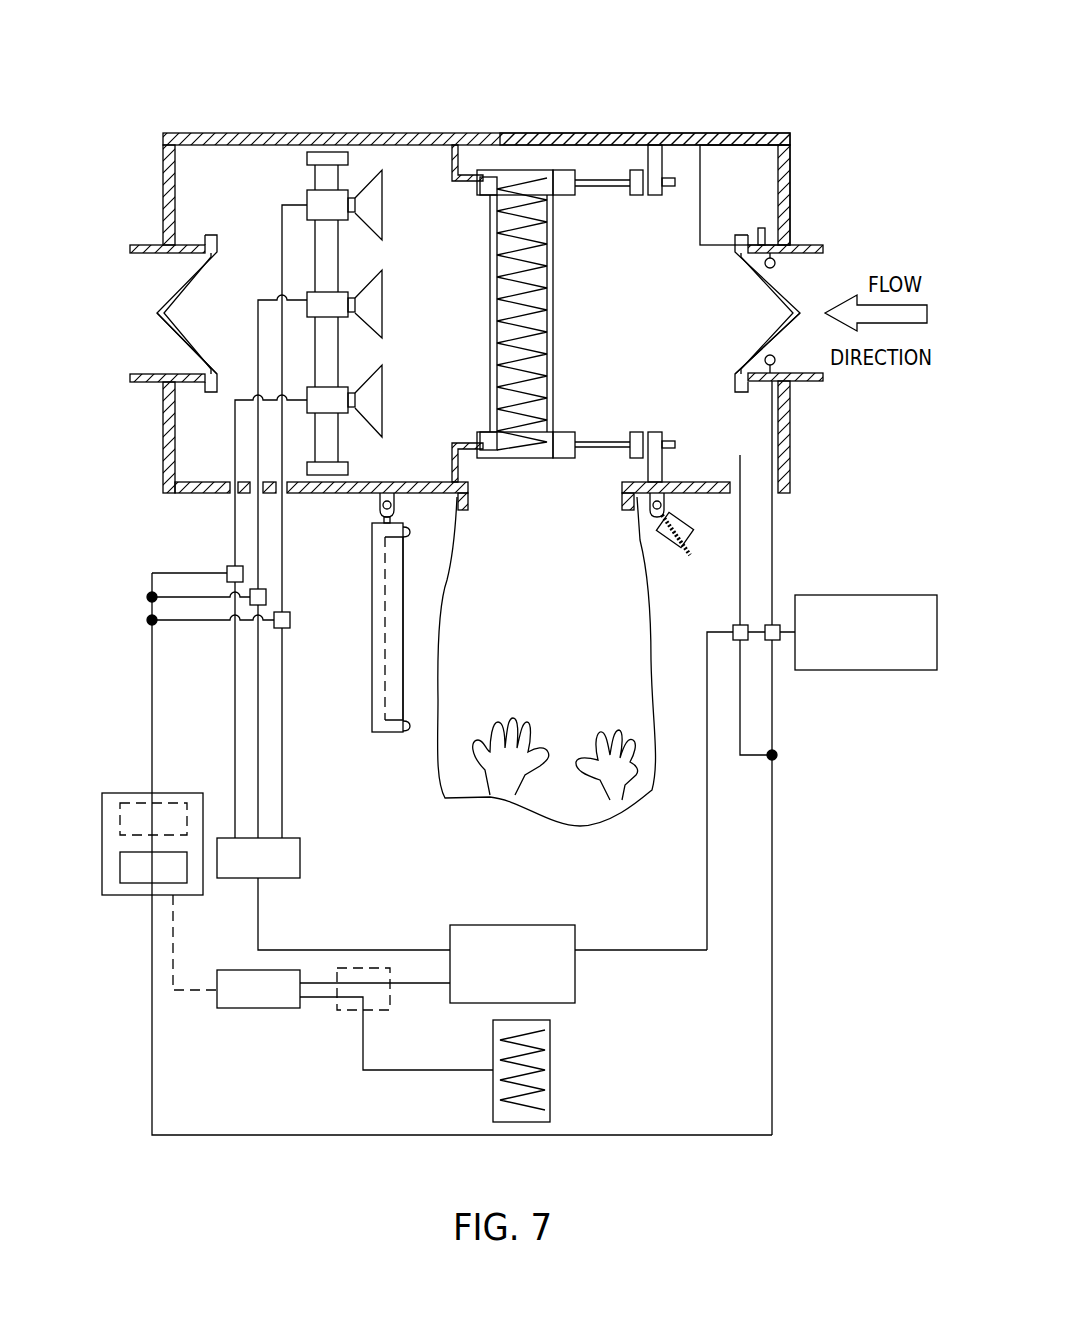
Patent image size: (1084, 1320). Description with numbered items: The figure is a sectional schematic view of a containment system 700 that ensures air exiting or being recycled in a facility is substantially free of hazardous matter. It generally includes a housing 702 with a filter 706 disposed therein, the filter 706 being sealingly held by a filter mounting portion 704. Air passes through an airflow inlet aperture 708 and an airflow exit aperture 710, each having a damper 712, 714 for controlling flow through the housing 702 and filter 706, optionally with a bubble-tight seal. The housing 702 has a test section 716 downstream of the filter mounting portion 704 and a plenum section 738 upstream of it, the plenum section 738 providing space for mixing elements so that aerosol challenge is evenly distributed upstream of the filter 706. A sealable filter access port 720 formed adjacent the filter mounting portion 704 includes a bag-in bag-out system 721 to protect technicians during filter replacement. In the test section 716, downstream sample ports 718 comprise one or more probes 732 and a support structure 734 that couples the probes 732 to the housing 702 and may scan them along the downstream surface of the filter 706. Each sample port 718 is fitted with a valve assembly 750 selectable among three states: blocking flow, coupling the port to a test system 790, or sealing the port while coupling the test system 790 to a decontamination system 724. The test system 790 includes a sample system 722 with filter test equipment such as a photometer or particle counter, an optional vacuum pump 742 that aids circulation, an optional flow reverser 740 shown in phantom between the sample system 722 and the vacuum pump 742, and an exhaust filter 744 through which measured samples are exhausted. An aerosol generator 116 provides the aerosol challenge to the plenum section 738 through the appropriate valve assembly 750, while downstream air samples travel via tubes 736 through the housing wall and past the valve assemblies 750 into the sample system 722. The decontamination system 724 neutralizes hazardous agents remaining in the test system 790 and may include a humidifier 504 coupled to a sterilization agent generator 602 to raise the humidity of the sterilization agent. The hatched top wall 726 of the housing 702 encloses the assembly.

The containment system 700 is at (786, 92).
The housing 702 is at (223, 133).
The filter mounting portion 704 is at (529, 160).
The filter 706 is at (530, 290).
The airflow inlet aperture 708 is at (812, 285).
The airflow exit aperture 710 is at (150, 328).
The damper 712 is at (780, 335).
The damper 714 is at (185, 342).
The test section 716 is at (455, 313).
The sample ports 718 is at (282, 490).
The sealable filter access port 720 is at (526, 478).
The bag-in bag-out system 721 is at (466, 713).
The sample system 722 is at (487, 925).
The decontamination system 724 is at (188, 895).
The top wall 726 is at (690, 133).
The probes 732 is at (397, 205).
The support structure 734 is at (332, 175).
The tubes 736 is at (222, 447).
The plenum section 738 is at (663, 269).
The flow reverser 740 is at (367, 968).
The vacuum pump 742 is at (243, 1008).
The exhaust filter 744 is at (550, 1078).
The valve assembly 750 is at (243, 574).
The test system 790 is at (548, 900).
The humidifier 504 is at (135, 755).
The sterilization agent generator 602 is at (137, 885).
The aerosol generator 116 is at (883, 595).